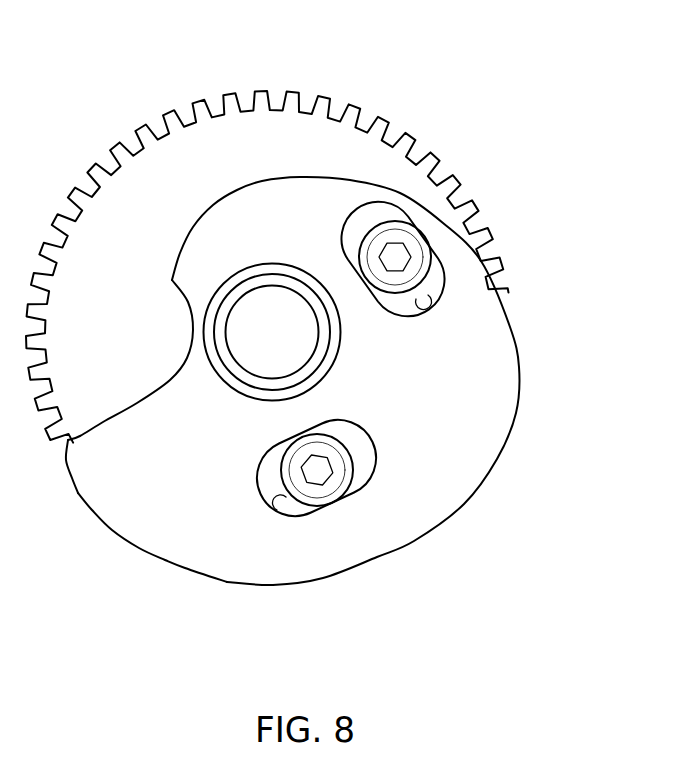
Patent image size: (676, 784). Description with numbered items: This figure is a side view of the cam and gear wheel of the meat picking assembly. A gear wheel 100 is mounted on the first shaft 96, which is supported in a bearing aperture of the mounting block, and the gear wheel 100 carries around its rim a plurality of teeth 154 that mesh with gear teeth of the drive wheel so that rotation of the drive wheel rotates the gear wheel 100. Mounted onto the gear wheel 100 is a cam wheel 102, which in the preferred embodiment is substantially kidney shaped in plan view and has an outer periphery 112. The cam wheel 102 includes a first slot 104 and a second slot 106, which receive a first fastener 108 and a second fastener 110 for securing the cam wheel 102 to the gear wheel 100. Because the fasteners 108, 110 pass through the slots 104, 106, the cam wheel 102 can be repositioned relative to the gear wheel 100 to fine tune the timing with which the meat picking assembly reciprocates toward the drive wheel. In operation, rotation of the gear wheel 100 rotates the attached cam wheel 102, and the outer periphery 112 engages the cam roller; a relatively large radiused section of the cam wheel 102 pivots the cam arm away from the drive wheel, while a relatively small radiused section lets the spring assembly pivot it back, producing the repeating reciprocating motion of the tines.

The first shaft 96 is at (275, 322).
The gear wheel 100 is at (267, 244).
The cam wheel 102 is at (272, 395).
The first slot 104 is at (290, 508).
The second slot 106 is at (430, 298).
The first fastener 108 is at (335, 485).
The second fastener 110 is at (410, 243).
The outer periphery 112 is at (138, 550).
The teeth 154 is at (142, 140).